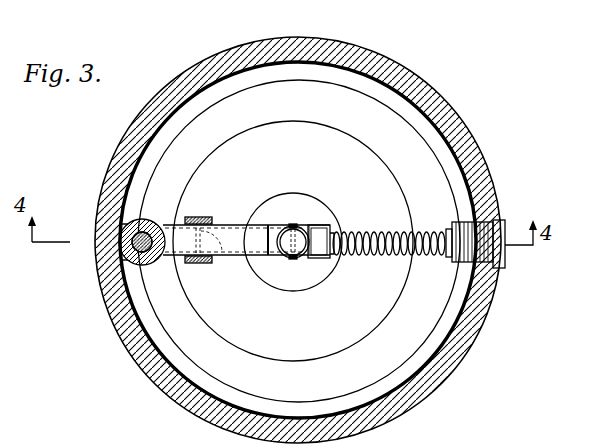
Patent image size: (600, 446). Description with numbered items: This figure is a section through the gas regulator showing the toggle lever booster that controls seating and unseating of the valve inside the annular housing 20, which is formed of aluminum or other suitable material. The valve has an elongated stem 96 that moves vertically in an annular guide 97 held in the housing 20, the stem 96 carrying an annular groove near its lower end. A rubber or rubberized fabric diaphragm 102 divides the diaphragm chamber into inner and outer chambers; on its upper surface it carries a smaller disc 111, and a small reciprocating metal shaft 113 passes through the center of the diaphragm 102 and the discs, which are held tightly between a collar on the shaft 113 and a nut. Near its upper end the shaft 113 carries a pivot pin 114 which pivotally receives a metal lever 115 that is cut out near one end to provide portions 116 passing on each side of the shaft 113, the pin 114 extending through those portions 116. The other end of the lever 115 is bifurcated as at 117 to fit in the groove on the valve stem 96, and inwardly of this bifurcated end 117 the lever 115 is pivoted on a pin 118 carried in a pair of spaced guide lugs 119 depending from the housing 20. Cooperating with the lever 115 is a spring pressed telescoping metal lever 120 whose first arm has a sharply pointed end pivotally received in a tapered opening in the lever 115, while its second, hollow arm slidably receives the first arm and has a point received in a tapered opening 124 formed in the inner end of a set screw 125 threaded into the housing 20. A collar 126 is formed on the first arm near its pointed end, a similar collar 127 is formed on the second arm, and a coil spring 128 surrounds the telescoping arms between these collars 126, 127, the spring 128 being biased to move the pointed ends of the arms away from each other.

The annular housing 20 is at (486, 316).
The valve stem 96 is at (125, 250).
The annular guide 97 is at (128, 224).
The diaphragm 102 is at (377, 162).
The disc 111 is at (299, 228).
The reciprocating metal shaft 113 is at (284, 257).
The pivot pin 114 is at (313, 212).
The lever 115 is at (225, 225).
The portions 116 is at (301, 259).
The bifurcated end 117 is at (123, 208).
The pin 118 is at (215, 256).
The guide lugs 119 is at (189, 263).
The spring pressed telescoping metal lever 120 is at (381, 226).
The tapered opening 124 is at (327, 253).
The set screw 125 is at (502, 232).
The collar 126 is at (340, 237).
The collar 127 is at (446, 230).
The coil spring 128 is at (371, 254).